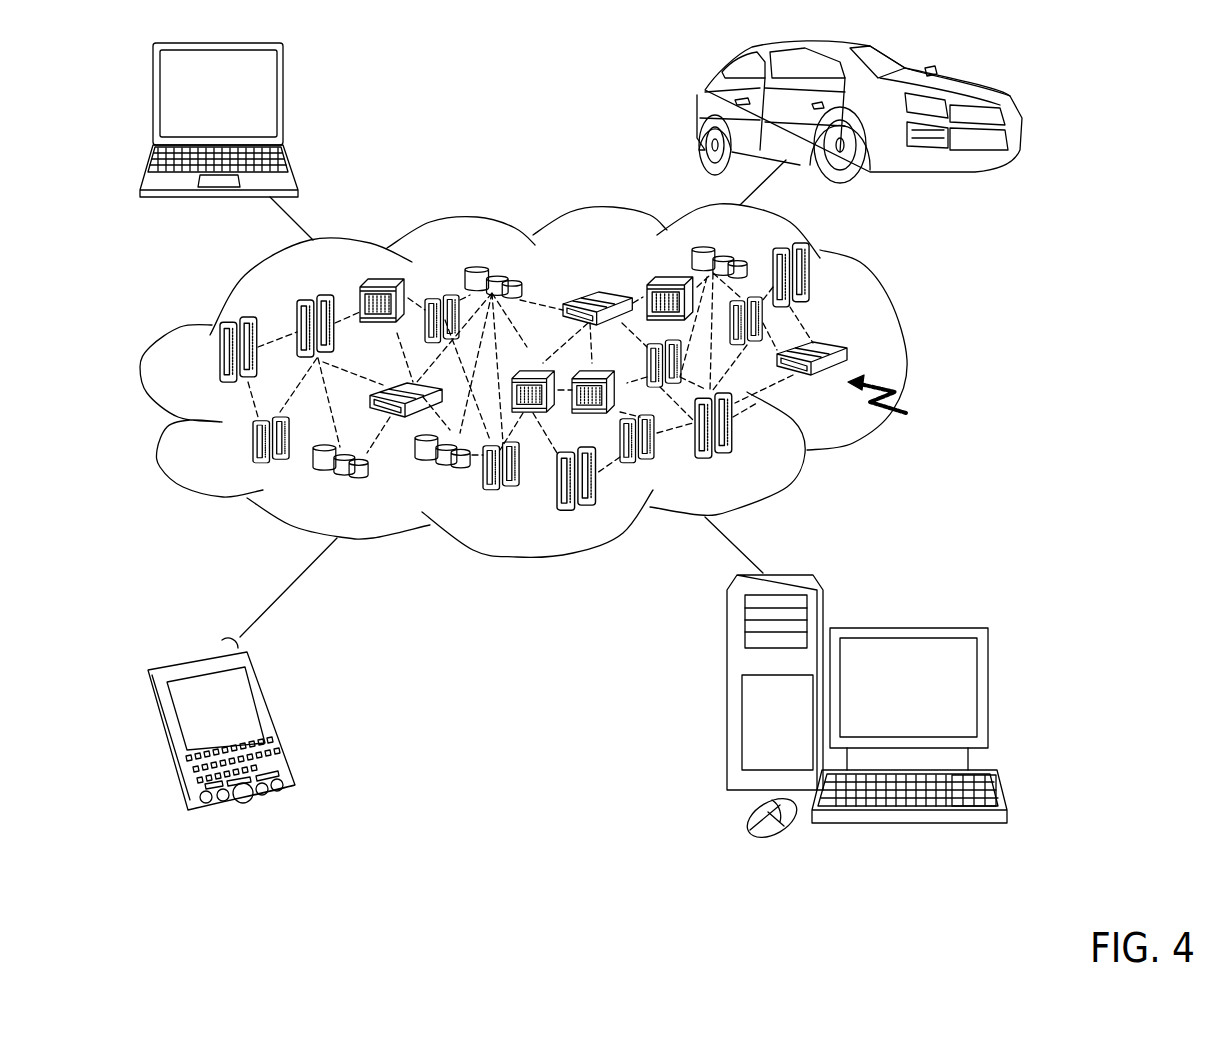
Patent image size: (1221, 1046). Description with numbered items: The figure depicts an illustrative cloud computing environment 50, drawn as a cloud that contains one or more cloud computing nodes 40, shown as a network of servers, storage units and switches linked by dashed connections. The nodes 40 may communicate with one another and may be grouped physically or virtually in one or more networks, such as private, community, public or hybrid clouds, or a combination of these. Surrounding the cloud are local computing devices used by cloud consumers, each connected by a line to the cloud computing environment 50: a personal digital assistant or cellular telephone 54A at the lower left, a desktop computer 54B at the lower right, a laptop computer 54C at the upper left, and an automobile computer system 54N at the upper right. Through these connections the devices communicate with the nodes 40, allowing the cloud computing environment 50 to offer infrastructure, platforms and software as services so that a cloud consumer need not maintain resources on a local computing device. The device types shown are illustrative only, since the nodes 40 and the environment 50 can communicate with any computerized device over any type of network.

The laptop computer 54C is at (283, 100).
The automobile computer system 54N is at (697, 112).
The cloud computing environment 50 is at (907, 357).
The cloud computing nodes 40 is at (897, 402).
The personal digital assistant or cellular telephone 54A is at (277, 718).
The desktop computer 54B is at (905, 628).